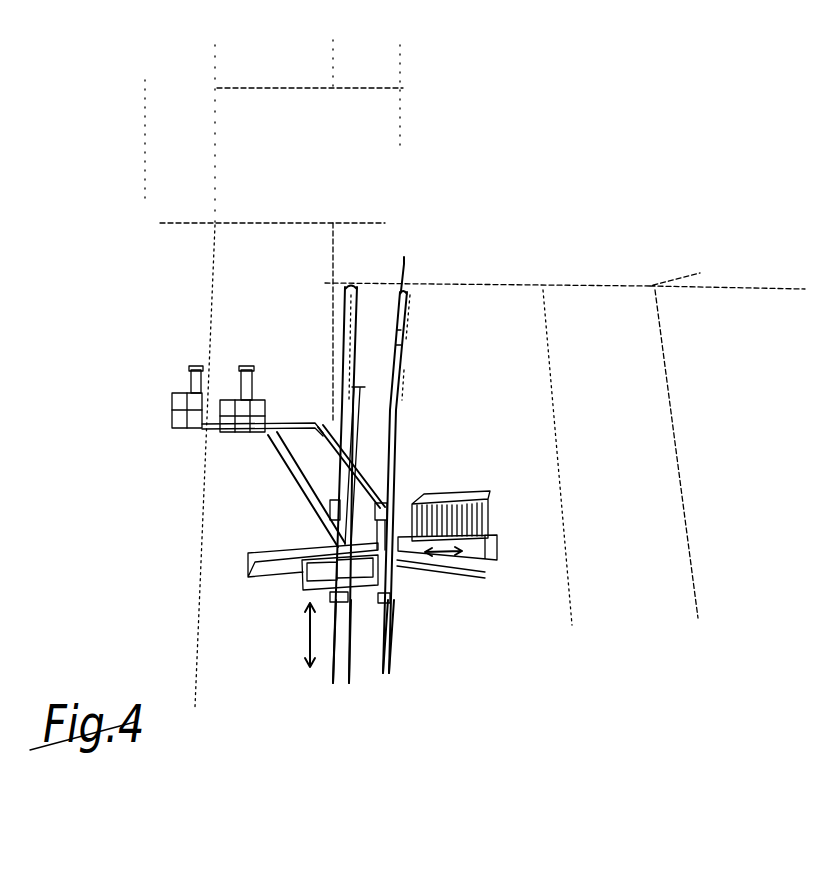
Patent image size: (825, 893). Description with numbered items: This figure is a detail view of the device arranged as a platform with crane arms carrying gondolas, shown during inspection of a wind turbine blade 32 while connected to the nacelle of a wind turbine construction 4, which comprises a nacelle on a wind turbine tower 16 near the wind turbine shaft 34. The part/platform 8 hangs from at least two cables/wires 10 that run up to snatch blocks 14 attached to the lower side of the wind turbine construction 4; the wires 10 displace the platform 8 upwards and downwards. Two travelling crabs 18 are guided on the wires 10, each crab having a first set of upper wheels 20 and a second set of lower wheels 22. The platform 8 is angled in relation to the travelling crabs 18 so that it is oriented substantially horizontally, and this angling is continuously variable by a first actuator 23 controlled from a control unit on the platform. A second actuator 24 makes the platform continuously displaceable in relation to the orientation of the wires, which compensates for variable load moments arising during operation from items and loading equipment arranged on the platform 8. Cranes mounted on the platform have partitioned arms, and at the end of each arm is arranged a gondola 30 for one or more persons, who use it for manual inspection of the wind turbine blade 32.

The wind turbine construction 4 is at (565, 180).
The part/platform 8 is at (447, 466).
The cables/wires 10 is at (333, 685).
The snatch blocks 14 is at (357, 288).
The wind turbine tower 16 is at (620, 457).
The travelling crabs 18 is at (348, 365).
The first set of upper wheels 20 is at (410, 343).
The second set of lower wheels 22 is at (345, 600).
The first actuator 23 is at (412, 583).
The second actuator 24 is at (262, 562).
The gondola 30 is at (188, 435).
The wind turbine blade 32 is at (228, 615).
The wind turbine shaft 34 is at (281, 155).